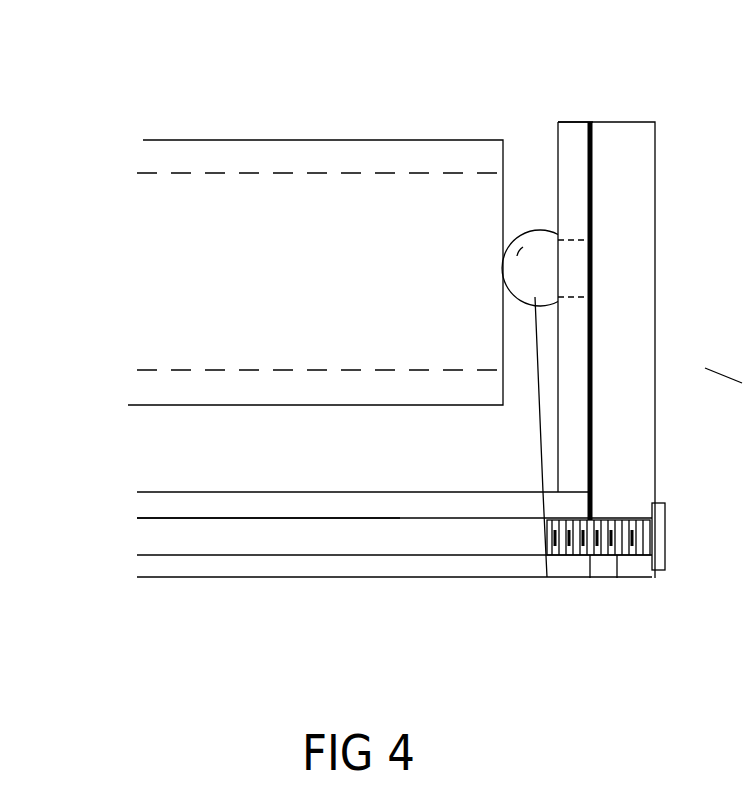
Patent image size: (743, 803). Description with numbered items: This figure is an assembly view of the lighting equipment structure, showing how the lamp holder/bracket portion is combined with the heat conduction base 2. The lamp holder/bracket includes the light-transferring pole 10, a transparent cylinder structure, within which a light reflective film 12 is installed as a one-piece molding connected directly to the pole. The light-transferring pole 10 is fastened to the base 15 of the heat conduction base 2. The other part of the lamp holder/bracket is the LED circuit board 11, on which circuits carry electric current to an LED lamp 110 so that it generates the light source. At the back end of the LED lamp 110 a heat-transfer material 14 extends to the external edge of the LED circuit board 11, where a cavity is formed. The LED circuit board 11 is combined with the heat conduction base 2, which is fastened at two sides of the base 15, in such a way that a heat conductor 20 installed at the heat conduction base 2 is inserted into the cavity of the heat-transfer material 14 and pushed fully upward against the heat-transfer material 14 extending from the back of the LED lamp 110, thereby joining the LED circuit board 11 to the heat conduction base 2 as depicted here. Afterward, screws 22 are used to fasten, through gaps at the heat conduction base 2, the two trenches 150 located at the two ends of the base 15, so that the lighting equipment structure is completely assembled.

The light-transferring pole 10 is at (444, 140).
The light reflective film 12 is at (370, 220).
The heat-transfer material 14 is at (568, 250).
The LED circuit board 11 is at (574, 138).
The heat conduction base 2 is at (647, 163).
The heat conductor 20 is at (593, 297).
The base 15 is at (463, 568).
The trench 150 is at (230, 532).
The LED lamp 110 is at (547, 577).
The screws 22 is at (617, 577).